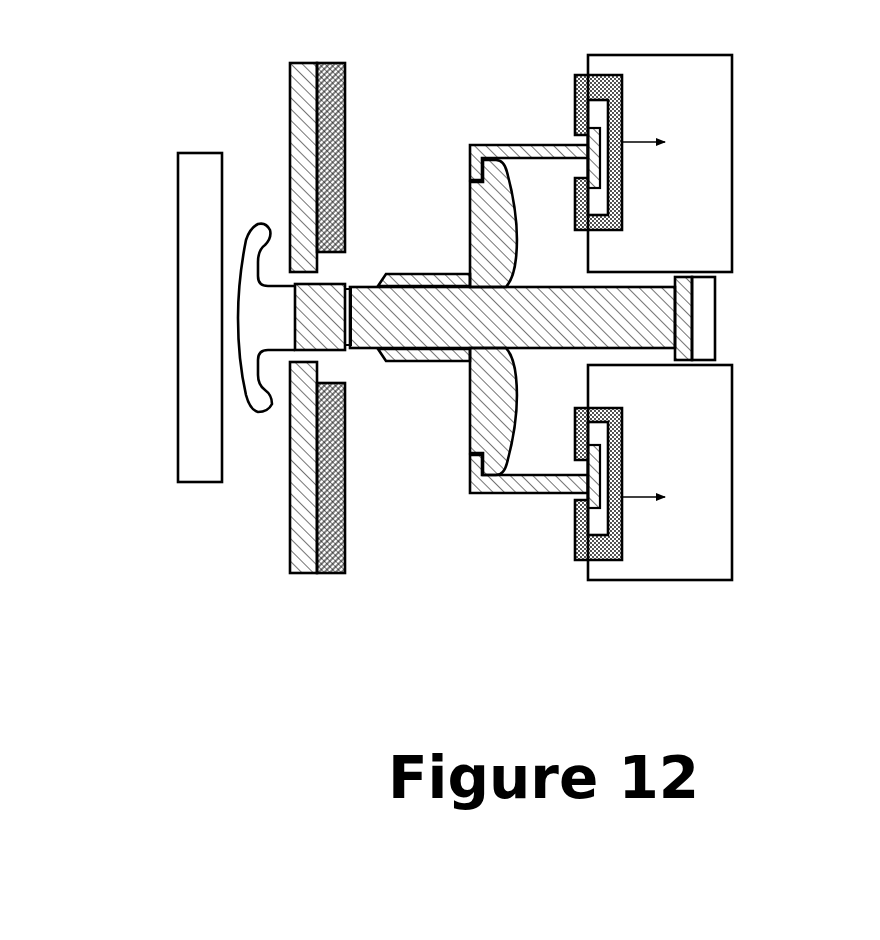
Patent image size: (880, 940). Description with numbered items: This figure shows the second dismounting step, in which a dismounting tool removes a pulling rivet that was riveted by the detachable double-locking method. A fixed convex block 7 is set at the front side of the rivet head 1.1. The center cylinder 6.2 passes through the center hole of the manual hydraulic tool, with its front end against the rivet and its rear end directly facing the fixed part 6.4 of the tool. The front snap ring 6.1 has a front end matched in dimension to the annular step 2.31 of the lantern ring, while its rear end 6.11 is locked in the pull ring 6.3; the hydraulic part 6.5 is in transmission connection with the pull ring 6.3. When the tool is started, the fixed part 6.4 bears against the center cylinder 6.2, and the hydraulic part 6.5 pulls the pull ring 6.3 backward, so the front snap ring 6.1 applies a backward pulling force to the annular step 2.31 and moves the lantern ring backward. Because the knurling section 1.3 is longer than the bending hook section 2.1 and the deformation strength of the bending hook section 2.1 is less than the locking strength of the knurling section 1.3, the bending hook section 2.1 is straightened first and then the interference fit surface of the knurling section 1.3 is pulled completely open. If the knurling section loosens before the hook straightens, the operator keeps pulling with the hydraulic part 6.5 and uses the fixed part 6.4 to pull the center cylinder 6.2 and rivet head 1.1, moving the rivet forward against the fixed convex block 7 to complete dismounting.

The fixed convex block 7 is at (178, 180).
The rivet head 1.1 is at (255, 307).
The knurling section 1.3 is at (291, 203).
The bending hook section 2.1 is at (387, 271).
The annular step 2.31 is at (502, 453).
The front snap ring 6.1 is at (480, 487).
The rear end of the front snap ring 6.11 is at (577, 522).
The center cylinder 6.2 is at (513, 303).
The pull ring 6.3 is at (595, 82).
The fixed part 6.4 is at (717, 337).
The hydraulic part 6.5 is at (688, 105).